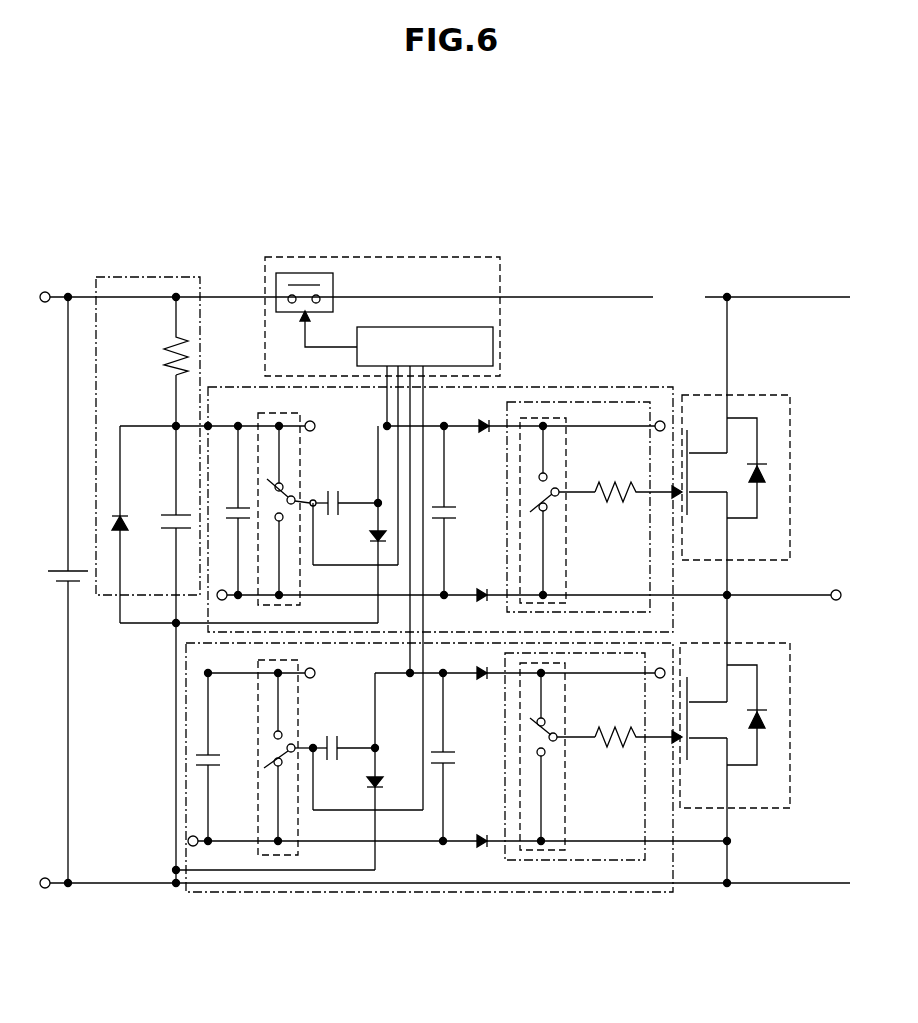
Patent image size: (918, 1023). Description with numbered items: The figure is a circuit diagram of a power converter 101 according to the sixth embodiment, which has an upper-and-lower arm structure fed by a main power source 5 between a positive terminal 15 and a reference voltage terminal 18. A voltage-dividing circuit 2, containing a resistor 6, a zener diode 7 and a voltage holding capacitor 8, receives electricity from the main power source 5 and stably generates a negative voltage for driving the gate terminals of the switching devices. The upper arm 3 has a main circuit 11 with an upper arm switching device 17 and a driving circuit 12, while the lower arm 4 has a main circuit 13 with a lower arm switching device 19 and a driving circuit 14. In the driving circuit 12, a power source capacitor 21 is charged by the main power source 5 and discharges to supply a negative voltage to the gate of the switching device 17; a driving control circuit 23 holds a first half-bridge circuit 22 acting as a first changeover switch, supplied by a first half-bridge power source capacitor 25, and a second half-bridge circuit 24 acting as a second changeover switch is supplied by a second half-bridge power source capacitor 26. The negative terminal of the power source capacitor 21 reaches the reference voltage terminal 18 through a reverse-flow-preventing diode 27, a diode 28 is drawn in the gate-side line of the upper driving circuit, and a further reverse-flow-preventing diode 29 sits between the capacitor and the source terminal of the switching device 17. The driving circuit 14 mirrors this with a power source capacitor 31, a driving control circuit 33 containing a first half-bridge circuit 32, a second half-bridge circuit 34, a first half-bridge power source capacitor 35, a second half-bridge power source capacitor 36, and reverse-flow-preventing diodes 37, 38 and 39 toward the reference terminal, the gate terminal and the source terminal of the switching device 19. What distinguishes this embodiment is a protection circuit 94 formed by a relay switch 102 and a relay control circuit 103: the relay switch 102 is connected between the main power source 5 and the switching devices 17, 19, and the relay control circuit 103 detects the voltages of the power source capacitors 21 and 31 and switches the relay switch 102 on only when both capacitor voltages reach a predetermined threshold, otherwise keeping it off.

The voltage-dividing circuit 2 is at (150, 274).
The upper arm 3 is at (800, 498).
The lower arm 4 is at (800, 738).
The main power source 5 is at (56, 568).
The resistor 6 is at (166, 348).
The zener diode 7 is at (124, 524).
The voltage holding capacitor 8 is at (172, 512).
The main circuit 11 is at (790, 428).
The driving circuit 12 is at (540, 386).
The main circuit 13 is at (790, 680).
The driving circuit 14 is at (380, 895).
The positive terminal 15 is at (50, 290).
The switching device 17 is at (700, 453).
The reference voltage terminal 18 is at (50, 890).
The switching device 19 is at (710, 740).
The power source capacitor 21 is at (333, 494).
The first half-bridge circuit 22 is at (556, 410).
The driving control circuit 23 is at (615, 400).
The second half-bridge circuit 24 is at (278, 412).
The first half-bridge power source capacitor 25 is at (452, 505).
The second half-bridge power source capacitor 26 is at (238, 505).
The reverse-flow-preventing diode 27 is at (370, 538).
The diode 28 is at (488, 416).
The reverse-flow-preventing diode 29 is at (482, 588).
The power source capacitor 31 is at (332, 740).
The first half-bridge circuit 32 is at (520, 852).
The driving control circuit 33 is at (610, 862).
The second half-bridge circuit 34 is at (275, 857).
The first half-bridge power source capacitor 35 is at (452, 752).
The second half-bridge power source capacitor 36 is at (212, 754).
The reverse-flow-preventing diode 37 is at (368, 784).
The reverse-flow-preventing diode 38 is at (483, 667).
The reverse-flow-preventing diode 39 is at (482, 835).
The protection circuit 94 is at (410, 256).
The power converter 101 is at (548, 222).
The relay switch 102 is at (310, 272).
The relay control circuit 103 is at (425, 568).